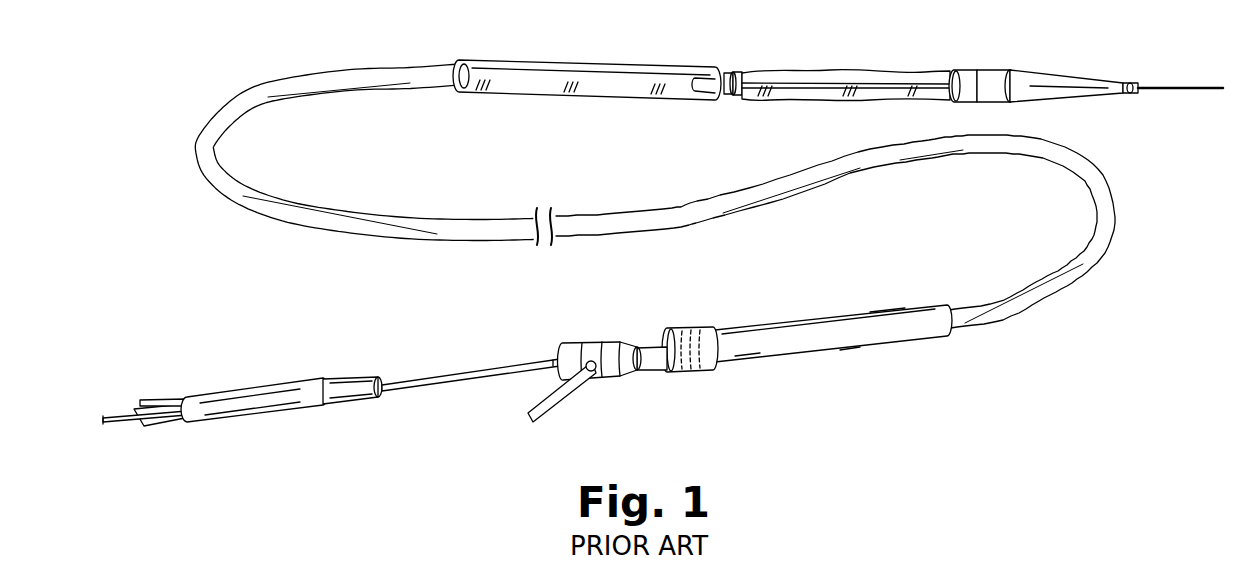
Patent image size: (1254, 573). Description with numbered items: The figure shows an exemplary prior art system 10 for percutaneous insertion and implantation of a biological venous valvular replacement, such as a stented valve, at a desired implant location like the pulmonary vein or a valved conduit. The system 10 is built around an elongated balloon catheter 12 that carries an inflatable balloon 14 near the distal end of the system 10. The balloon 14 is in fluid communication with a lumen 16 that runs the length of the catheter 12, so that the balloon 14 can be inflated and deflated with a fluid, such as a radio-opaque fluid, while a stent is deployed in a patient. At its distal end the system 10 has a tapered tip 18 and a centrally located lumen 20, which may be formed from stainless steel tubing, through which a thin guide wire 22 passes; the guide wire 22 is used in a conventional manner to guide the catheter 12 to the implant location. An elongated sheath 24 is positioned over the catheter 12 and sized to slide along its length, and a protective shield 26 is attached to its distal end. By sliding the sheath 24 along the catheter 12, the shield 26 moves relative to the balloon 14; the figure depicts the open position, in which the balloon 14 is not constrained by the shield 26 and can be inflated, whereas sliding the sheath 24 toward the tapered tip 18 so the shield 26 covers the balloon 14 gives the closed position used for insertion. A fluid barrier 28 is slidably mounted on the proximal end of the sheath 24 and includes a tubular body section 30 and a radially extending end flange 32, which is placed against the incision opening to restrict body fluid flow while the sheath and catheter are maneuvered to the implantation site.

The system 10 is at (788, 54).
The balloon catheter 12 is at (494, 355).
The inflatable balloon 14 is at (858, 73).
The lumen 16 is at (162, 400).
The tapered tip 18 is at (1050, 72).
The centrally located lumen 20 is at (1131, 83).
The guide wire 22 is at (1180, 86).
The sheath 24 is at (257, 182).
The protective shield 26 is at (632, 62).
The fluid barrier 28 is at (740, 339).
The tubular body section 30 is at (888, 318).
The end flange 32 is at (698, 371).